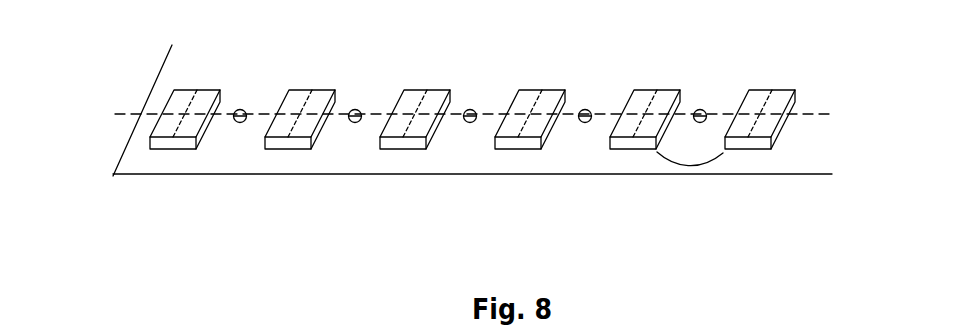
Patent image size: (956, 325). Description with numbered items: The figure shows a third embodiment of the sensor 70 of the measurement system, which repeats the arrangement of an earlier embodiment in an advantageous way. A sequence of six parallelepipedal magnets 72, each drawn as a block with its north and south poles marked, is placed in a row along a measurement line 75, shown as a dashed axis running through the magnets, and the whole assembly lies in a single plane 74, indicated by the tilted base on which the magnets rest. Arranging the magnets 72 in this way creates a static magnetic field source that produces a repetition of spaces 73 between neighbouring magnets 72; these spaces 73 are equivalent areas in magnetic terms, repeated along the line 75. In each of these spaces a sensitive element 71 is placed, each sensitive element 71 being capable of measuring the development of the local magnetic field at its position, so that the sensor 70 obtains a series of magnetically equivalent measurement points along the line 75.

The sensor 70 is at (217, 60).
The sensitive element 71 is at (241, 124).
The parallelepipedal magnet 72 is at (780, 90).
The space 73 is at (690, 180).
The plane 74 is at (147, 165).
The measurement line 75 is at (822, 112).